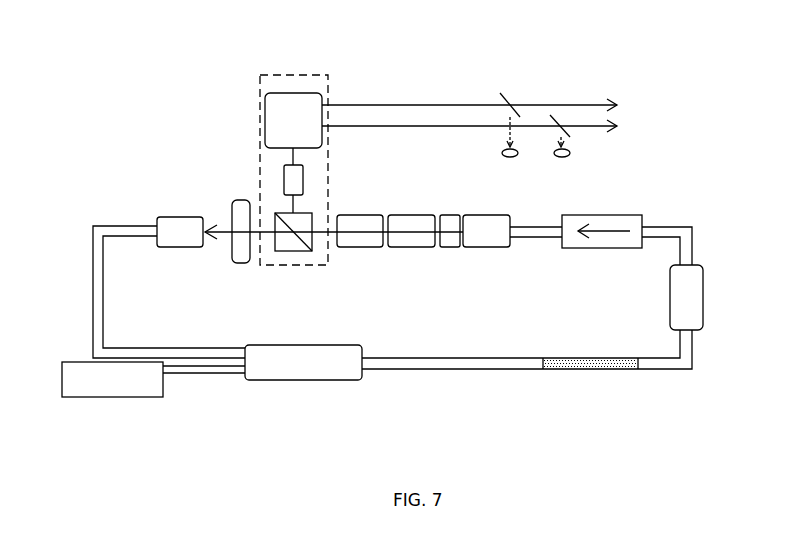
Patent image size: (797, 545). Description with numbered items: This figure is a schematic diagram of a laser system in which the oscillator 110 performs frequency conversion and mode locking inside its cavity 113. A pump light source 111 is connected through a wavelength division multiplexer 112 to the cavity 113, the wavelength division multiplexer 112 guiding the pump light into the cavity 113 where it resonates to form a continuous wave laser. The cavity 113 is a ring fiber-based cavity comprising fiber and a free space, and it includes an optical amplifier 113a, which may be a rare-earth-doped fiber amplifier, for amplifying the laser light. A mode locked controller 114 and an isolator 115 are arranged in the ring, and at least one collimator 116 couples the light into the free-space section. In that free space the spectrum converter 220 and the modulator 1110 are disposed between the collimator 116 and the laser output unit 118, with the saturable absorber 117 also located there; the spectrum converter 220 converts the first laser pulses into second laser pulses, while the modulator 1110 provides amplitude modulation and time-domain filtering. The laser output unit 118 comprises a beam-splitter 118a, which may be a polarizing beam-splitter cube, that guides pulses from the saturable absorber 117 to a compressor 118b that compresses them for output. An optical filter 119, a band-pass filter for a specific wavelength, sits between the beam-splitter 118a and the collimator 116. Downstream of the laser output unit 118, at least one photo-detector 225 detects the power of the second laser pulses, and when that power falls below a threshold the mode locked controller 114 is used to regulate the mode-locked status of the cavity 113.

The oscillator 110 is at (105, 39).
The pump light source 111 is at (117, 397).
The wavelength division multiplexer 112 is at (275, 380).
The cavity 113 is at (605, 370).
The optical amplifier 113a is at (497, 370).
The mode locked controller 114 is at (703, 292).
The isolator 115 is at (600, 249).
The collimator 116 is at (172, 217).
The saturable absorber 117 is at (358, 247).
The laser output unit 118 is at (313, 75).
The beam-splitter 118a is at (292, 251).
The compressor 118b is at (275, 103).
The optical filter 119 is at (240, 200).
The spectrum converter 220 is at (410, 247).
The photo-detector 225 is at (570, 154).
The modulator 1110 is at (450, 247).